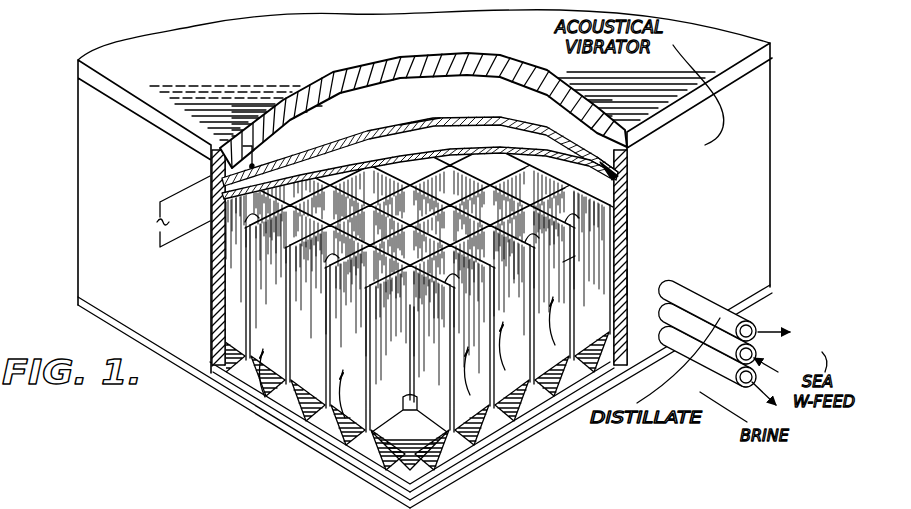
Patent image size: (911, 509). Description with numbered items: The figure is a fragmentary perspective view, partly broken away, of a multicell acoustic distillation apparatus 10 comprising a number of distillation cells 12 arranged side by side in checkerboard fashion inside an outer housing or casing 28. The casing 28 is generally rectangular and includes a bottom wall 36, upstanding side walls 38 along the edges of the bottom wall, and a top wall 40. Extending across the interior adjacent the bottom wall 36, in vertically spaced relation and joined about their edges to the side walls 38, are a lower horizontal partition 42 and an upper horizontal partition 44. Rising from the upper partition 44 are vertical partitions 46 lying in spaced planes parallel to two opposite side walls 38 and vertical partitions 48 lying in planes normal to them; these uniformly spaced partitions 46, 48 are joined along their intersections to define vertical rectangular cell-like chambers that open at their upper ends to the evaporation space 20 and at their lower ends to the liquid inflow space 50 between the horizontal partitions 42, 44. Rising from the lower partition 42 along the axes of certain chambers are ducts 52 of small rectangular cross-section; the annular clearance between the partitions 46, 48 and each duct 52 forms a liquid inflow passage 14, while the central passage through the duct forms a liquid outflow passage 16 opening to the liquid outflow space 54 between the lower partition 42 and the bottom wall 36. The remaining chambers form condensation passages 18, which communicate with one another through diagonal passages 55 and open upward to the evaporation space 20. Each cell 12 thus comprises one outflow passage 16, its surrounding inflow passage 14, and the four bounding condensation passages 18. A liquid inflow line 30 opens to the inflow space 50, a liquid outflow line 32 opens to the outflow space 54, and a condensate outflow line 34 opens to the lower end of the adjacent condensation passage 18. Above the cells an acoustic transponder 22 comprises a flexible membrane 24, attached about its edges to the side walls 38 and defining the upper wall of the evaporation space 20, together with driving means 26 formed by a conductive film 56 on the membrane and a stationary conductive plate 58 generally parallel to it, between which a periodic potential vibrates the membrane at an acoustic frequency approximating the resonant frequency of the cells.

The distillation apparatus 10 is at (418, 259).
The distillation cell 12 is at (374, 220).
The liquid inflow passage 14 is at (620, 322).
The liquid outflow passage 16 is at (570, 268).
The condensation passage 18 is at (690, 292).
The evaporation space 20 is at (620, 197).
The acoustic transponder 22 is at (620, 163).
The flexible membrane 24 is at (420, 133).
The membrane driving means 26 is at (183, 181).
The outer housing or casing 28 is at (88, 216).
The liquid inflow line 30 is at (755, 352).
The liquid outflow line 32 is at (720, 372).
The condensate outflow line 34 is at (748, 320).
The bottom wall 36 is at (300, 436).
The side walls 38 is at (745, 170).
The top wall 40 is at (737, 45).
The lower horizontal partition 42 is at (352, 470).
The upper horizontal partition 44 is at (400, 470).
The vertical partitions 46 is at (248, 258).
The vertical partitions 48 is at (620, 222).
The liquid inflow space 50 is at (507, 425).
The duct 52 is at (563, 267).
The liquid outflow space 54 is at (497, 447).
The diagonal passages 55 is at (243, 310).
The conductive coating or film 56 is at (277, 157).
The conductive plate 58 is at (337, 115).